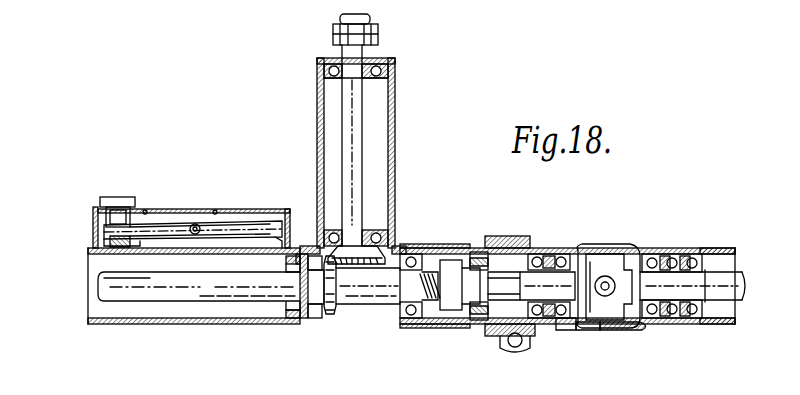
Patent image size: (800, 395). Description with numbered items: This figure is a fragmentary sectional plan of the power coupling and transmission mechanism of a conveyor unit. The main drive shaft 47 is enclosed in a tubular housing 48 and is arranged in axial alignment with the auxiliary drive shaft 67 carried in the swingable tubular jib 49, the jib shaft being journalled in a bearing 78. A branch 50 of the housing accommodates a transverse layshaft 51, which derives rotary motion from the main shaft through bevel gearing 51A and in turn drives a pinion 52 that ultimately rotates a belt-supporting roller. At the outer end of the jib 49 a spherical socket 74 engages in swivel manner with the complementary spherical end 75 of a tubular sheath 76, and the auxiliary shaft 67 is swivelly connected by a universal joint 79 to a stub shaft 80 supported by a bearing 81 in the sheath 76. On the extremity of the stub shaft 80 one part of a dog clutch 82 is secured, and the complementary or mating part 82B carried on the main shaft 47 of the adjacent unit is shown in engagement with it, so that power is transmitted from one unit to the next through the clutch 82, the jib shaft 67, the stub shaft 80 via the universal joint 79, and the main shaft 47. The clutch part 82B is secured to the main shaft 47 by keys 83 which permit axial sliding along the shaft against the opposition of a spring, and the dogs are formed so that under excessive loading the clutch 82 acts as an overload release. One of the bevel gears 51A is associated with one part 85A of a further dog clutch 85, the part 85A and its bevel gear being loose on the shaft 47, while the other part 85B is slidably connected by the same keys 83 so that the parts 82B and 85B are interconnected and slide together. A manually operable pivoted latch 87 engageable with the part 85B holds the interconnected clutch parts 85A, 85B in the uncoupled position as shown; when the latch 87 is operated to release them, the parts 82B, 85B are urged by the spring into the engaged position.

The main drive shaft 47 is at (148, 295).
The tubular housing 48 is at (236, 321).
The swingable jib 49 is at (718, 326).
The branch of the housing 50 is at (395, 121).
The transverse layshaft 51 is at (350, 116).
The bevel gearing 51A is at (340, 296).
The pinion 52 is at (333, 38).
The auxiliary drive shaft 67 is at (722, 286).
The spherical socket 74 is at (618, 332).
The spherical end 75 is at (592, 332).
The tubular sheath 76 is at (570, 332).
The bearing 78 is at (662, 318).
The universal joint 79 is at (608, 274).
The stub shaft 80 is at (566, 280).
The bearing 81 is at (546, 250).
The dog clutch 82 is at (469, 250).
The clutch part 82B is at (456, 308).
The keys 83 is at (400, 250).
The dog clutch 85 is at (314, 323).
The clutch part 85A is at (303, 254).
The clutch part 85B is at (287, 320).
The pivoted latch 87 is at (232, 224).